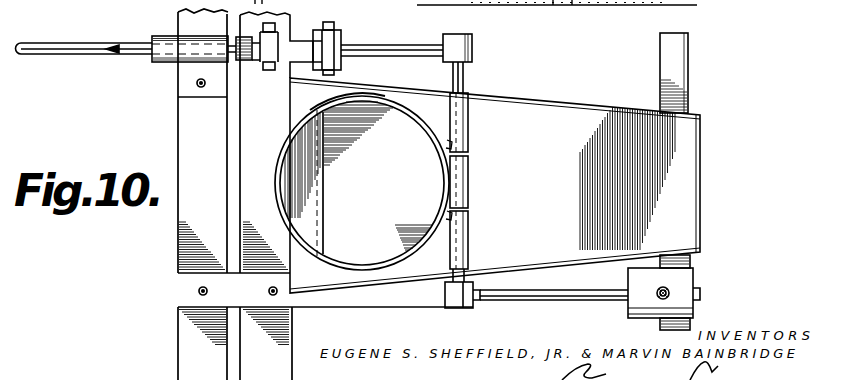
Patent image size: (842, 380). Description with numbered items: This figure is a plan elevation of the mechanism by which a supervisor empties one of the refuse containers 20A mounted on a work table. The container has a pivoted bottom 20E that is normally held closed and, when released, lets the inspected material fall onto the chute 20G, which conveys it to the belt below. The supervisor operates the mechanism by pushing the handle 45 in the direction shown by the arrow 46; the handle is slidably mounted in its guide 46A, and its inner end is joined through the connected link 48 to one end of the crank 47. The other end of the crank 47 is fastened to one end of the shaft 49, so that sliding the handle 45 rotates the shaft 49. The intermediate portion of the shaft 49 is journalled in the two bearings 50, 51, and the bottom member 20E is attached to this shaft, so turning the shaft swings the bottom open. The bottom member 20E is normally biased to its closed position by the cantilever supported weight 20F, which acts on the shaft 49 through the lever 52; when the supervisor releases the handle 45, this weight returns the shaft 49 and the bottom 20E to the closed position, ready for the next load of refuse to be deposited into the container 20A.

The handle 45 is at (40, 52).
The arrow 46 is at (96, 52).
The rod sleeve 46A is at (160, 62).
The crank 47 is at (390, 44).
The link 48 is at (302, 52).
The shaft 49 is at (465, 73).
The bearing 50 is at (467, 127).
The bearing 51 is at (467, 235).
The lever 52 is at (548, 296).
The refuse container 20A is at (280, 194).
The pivoted bottom 20E is at (331, 192).
The weight 20F is at (692, 280).
The chute 20G is at (586, 117).